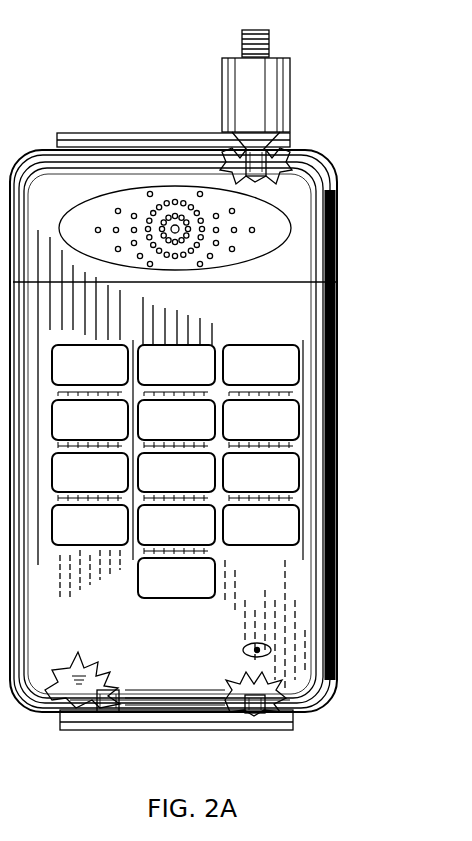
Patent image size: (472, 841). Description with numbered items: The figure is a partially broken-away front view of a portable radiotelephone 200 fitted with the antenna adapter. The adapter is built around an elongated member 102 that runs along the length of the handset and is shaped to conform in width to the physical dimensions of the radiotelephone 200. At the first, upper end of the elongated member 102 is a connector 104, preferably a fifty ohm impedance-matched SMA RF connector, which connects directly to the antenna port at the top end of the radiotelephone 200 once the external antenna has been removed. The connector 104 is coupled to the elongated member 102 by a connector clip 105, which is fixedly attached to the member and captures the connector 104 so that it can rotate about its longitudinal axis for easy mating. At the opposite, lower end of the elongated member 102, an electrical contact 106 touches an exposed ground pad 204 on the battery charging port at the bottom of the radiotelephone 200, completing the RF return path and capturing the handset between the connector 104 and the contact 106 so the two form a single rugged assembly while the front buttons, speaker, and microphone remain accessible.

The portable radiotelephone 200 is at (336, 282).
The elongated member 102 is at (138, 131).
The connector 104 is at (271, 37).
The connector clip 105 is at (222, 68).
The electrical contact 106 is at (235, 685).
The exposed ground pad 204 is at (97, 690).